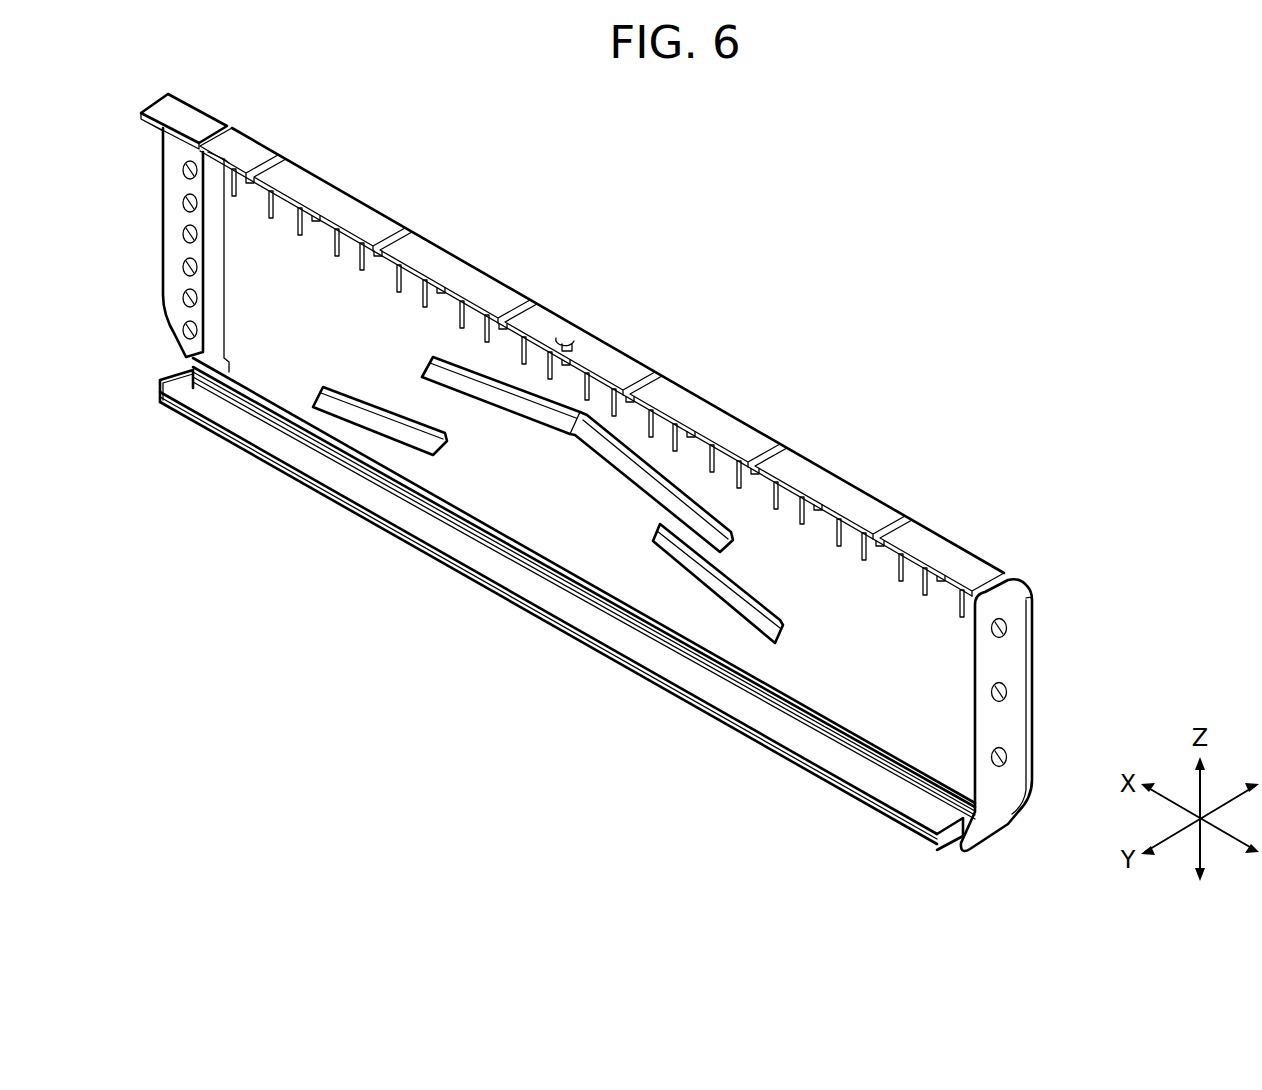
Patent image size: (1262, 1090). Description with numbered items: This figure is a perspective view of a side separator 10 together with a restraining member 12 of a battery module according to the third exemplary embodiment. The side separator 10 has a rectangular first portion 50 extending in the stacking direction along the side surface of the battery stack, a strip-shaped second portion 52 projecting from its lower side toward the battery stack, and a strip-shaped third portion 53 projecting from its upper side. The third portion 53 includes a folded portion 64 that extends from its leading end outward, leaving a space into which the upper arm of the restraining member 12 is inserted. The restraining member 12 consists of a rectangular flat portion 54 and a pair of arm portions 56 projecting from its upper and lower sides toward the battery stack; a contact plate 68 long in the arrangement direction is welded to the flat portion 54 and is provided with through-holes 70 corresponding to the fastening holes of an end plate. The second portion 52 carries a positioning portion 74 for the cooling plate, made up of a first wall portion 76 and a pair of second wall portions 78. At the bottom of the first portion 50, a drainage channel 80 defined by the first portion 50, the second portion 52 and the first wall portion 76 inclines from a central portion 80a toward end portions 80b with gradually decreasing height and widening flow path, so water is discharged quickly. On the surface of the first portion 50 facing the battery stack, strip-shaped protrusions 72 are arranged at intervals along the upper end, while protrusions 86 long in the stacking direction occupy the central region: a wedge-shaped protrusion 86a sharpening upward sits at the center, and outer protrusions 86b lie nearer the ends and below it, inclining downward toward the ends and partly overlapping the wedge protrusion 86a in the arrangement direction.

The side separator 10 is at (605, 503).
The restraining member 12 is at (621, 372).
The first portion 50 is at (1041, 721).
The second portion 52 is at (546, 616).
The third portion 53 is at (440, 272).
The flat portion 54 is at (218, 267).
The arm portion 56 is at (1003, 580).
The folded portion 64 is at (863, 507).
The contact plate 68 is at (153, 233).
The through-hole 70 is at (174, 172).
The protrusion 72 is at (613, 403).
The positioning portion 74 is at (243, 432).
The first wall portion 76 is at (290, 430).
The second wall portion 78 is at (182, 414).
The drainage channel 80 is at (584, 635).
The central portion 80a is at (622, 605).
The end portion 80b is at (205, 375).
The protrusion 86 is at (589, 386).
The wedge-shaped protrusion 86a is at (683, 490).
The outer protrusion 86b is at (360, 398).